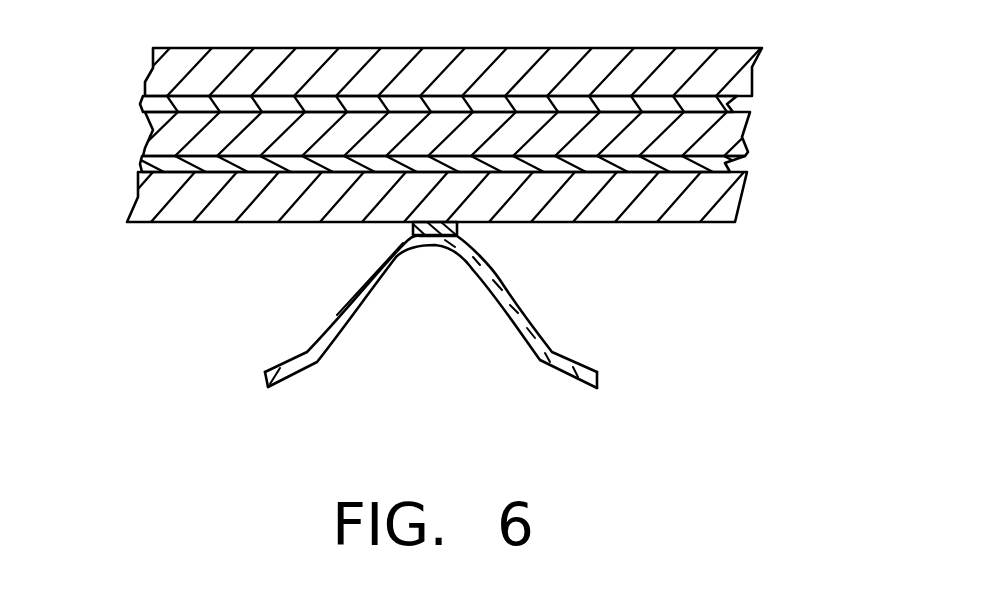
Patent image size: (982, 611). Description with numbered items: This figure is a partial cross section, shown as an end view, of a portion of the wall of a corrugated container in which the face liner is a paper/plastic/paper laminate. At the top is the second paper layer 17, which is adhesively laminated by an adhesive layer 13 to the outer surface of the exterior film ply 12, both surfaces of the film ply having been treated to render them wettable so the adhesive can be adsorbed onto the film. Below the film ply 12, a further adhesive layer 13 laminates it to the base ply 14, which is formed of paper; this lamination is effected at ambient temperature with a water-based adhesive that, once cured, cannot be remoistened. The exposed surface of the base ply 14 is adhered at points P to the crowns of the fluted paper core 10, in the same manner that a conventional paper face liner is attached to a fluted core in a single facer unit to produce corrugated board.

The second paper layer 17 is at (740, 80).
The adhesive layer 13 is at (183, 103).
The exterior film ply 12 is at (717, 133).
The base ply 14 is at (723, 200).
The points P is at (412, 228).
The fluted paper core 10 is at (431, 312).